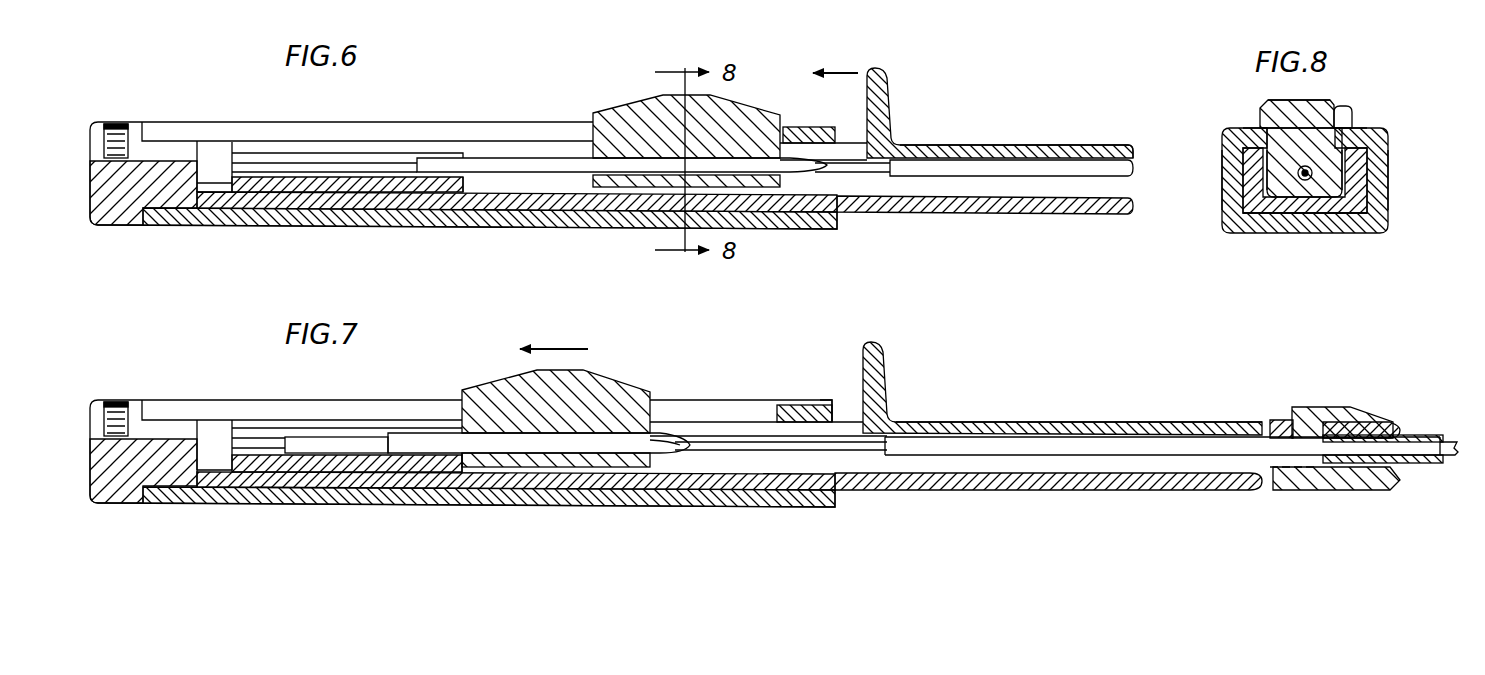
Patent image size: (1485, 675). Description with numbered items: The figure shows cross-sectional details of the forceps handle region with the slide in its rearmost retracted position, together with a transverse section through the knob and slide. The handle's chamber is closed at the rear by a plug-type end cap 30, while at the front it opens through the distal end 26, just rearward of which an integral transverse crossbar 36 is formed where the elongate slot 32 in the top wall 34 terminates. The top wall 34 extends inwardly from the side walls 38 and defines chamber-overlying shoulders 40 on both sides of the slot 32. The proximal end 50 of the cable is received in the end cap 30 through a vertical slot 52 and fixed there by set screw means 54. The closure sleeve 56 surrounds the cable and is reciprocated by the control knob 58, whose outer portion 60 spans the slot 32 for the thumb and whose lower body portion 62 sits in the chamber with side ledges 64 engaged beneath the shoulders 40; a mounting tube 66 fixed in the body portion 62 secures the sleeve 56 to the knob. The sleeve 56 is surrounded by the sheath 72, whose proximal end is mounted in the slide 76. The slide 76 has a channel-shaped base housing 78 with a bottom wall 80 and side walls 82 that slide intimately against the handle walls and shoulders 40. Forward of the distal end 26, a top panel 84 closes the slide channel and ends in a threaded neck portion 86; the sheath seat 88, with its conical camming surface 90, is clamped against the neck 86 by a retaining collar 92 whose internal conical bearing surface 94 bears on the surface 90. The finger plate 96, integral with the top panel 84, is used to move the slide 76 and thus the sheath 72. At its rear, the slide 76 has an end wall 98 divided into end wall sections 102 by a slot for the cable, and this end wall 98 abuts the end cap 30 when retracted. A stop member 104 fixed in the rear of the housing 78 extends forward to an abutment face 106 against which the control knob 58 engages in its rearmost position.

In FIG. 7, the distal end 26 is at (832, 410).
In FIG. 6, the end cap 30 is at (119, 228).
In FIG. 7, the end cap 30 is at (113, 504).
In FIG. 7, the elongate slot 32 is at (268, 416).
In FIG. 8, the elongate slot 32 is at (1345, 108).
In FIG. 8, the top wall 34 is at (1374, 123).
In FIG. 6, the transverse crossbar 36 is at (795, 127).
In FIG. 7, the transverse crossbar 36 is at (797, 409).
In FIG. 8, the side walls 38 is at (1232, 171).
In FIG. 6, the shoulders 40 is at (331, 149).
In FIG. 7, the shoulders 40 is at (347, 440).
In FIG. 8, the shoulders 40 is at (1326, 173).
In FIG. 6, the proximal end of the cable 50 is at (143, 193).
In FIG. 7, the proximal end of the cable 50 is at (148, 446).
In FIG. 6, the vertical slot 52 is at (137, 128).
In FIG. 6, the set screw means 54 is at (118, 123).
In FIG. 7, the set screw means 54 is at (116, 419).
In FIG. 6, the closure sleeve 56 is at (483, 153).
In FIG. 7, the closure sleeve 56 is at (731, 435).
In FIG. 6, the control knob 58 is at (637, 101).
In FIG. 7, the control knob 58 is at (493, 381).
In FIG. 8, the control knob 58 is at (1277, 100).
In FIG. 8, the outer portion 60 is at (1265, 110).
In FIG. 8, the lower body portion 62 is at (1360, 182).
In FIG. 8, the side ledges 64 is at (1256, 138).
In FIG. 7, the mounting tube 66 is at (650, 443).
In FIG. 8, the mounting tube 66 is at (1308, 181).
In FIG. 6, the sheath 72 is at (988, 157).
In FIG. 7, the sheath 72 is at (1001, 438).
In FIG. 6, the slide 76 is at (908, 133).
In FIG. 7, the slide 76 is at (931, 412).
In FIG. 6, the slide base housing 78 is at (999, 220).
In FIG. 7, the slide base housing 78 is at (1012, 497).
In FIG. 6, the bottom wall 80 is at (598, 205).
In FIG. 7, the bottom wall 80 is at (489, 497).
In FIG. 8, the bottom wall 80 is at (1282, 210).
In FIG. 8, the side walls of the slide 82 is at (1250, 195).
In FIG. 6, the top panel 84 is at (1060, 140).
In FIG. 7, the neck portion 86 is at (1287, 422).
In FIG. 7, the sheath seat 88 is at (1420, 429).
In FIG. 7, the camming surface 90 is at (1372, 420).
In FIG. 7, the retaining collar 92 is at (1323, 406).
In FIG. 7, the conical bearing surface 94 is at (1372, 485).
In FIG. 6, the finger plate 96 is at (882, 95).
In FIG. 7, the finger plate 96 is at (886, 368).
In FIG. 6, the end wall 98 is at (196, 184).
In FIG. 6, the end wall sections 102 is at (197, 133).
In FIG. 7, the end wall sections 102 is at (214, 445).
In FIG. 6, the stop member 104 is at (352, 186).
In FIG. 7, the stop member 104 is at (385, 464).
In FIG. 6, the abutment face 106 is at (466, 184).
In FIG. 7, the abutment face 106 is at (461, 466).